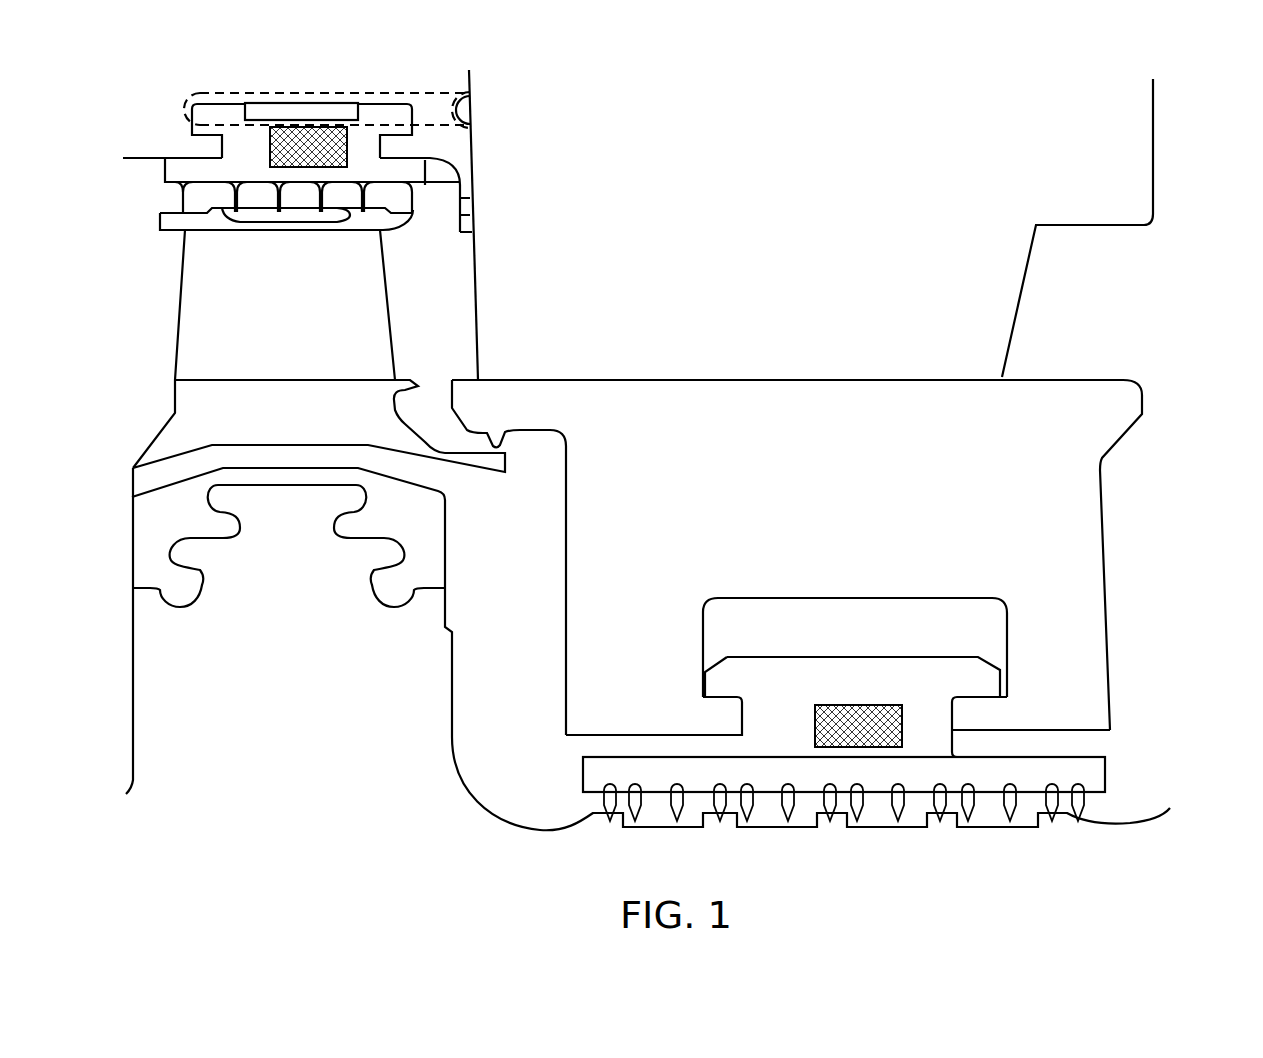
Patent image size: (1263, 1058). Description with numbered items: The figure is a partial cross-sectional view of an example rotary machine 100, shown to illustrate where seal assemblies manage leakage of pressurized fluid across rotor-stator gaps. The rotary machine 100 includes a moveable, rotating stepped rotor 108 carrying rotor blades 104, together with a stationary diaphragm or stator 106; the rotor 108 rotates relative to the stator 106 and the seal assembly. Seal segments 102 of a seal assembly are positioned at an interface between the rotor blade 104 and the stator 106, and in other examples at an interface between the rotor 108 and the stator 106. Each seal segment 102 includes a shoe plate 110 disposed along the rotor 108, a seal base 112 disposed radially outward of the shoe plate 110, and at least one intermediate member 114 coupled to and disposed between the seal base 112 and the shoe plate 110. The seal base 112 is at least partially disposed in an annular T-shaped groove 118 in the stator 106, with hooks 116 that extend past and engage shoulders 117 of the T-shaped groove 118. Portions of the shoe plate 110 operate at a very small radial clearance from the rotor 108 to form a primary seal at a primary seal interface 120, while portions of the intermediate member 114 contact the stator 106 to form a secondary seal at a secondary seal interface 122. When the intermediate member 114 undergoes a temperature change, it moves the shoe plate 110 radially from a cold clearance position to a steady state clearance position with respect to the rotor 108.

The rotary machine 100 is at (930, 63).
The seal segments 102 is at (165, 112).
The rotor blades 104 is at (307, 352).
The stator 106 is at (868, 454).
The stepped rotor 108 is at (299, 722).
The shoe plate 110 is at (160, 180).
The seal base 112 is at (378, 100).
The intermediate member 114 is at (222, 150).
The hooks 116 is at (977, 695).
The shoulders 117 is at (737, 697).
The T-shaped groove 118 is at (877, 637).
The primary seal interface 120 is at (1030, 828).
The secondary seal interface 122 is at (948, 717).